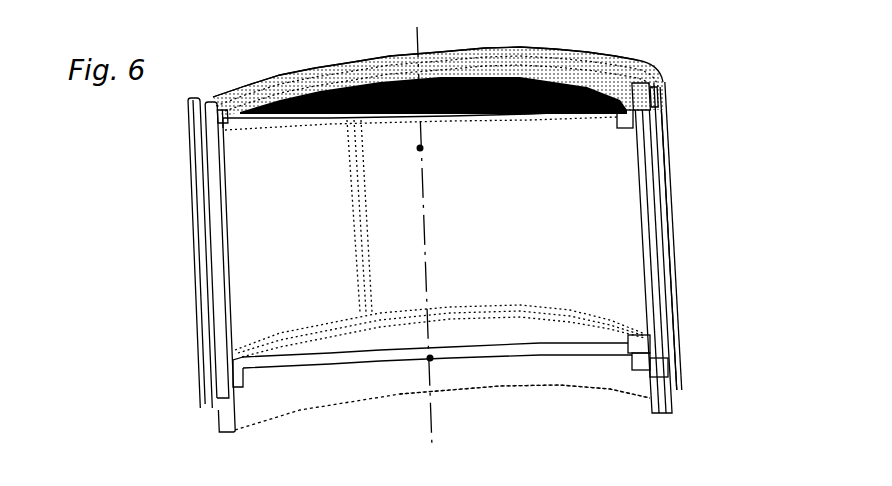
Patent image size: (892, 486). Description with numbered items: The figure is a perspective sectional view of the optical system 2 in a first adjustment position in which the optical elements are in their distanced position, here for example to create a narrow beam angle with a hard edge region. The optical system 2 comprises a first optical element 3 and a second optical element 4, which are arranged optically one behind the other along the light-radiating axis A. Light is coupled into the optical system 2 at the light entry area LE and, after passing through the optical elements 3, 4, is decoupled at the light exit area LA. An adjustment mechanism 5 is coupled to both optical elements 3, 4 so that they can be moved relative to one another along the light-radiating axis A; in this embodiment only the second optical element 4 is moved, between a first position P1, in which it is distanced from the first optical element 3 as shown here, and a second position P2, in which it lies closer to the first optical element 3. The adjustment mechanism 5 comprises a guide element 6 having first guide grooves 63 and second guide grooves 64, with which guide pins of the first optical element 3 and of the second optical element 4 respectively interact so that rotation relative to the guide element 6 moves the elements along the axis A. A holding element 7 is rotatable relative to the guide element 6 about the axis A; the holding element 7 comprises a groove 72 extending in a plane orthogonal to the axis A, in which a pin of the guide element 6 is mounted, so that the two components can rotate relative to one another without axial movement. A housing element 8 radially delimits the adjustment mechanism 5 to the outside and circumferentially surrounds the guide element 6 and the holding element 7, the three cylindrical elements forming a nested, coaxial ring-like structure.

The optical system 2 is at (720, 110).
The first optical element 3 is at (428, 140).
The second optical element 4 is at (450, 345).
The adjustment mechanism 5 is at (680, 170).
The guide element 6 is at (687, 261).
The holding element 7 is at (615, 261).
The housing element 8 is at (689, 250).
The first guide grooves 63 is at (172, 253).
The second guide grooves 64 is at (172, 250).
The groove 72 is at (180, 271).
The light exit area LA is at (593, 73).
The light entry area LE is at (528, 435).
The first position P1 is at (465, 341).
The second position P2 is at (447, 162).
The light-radiating axis A is at (456, 240).